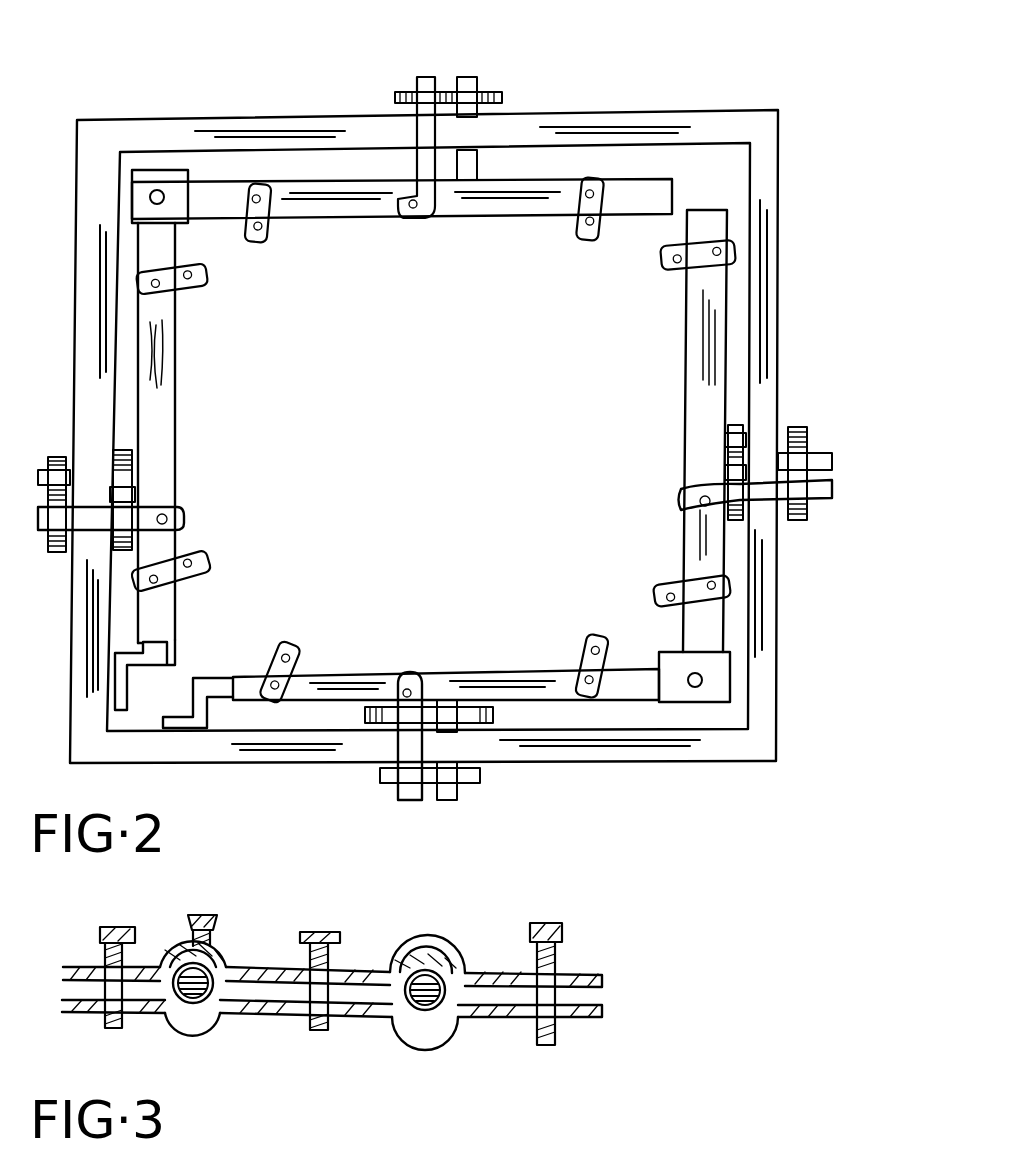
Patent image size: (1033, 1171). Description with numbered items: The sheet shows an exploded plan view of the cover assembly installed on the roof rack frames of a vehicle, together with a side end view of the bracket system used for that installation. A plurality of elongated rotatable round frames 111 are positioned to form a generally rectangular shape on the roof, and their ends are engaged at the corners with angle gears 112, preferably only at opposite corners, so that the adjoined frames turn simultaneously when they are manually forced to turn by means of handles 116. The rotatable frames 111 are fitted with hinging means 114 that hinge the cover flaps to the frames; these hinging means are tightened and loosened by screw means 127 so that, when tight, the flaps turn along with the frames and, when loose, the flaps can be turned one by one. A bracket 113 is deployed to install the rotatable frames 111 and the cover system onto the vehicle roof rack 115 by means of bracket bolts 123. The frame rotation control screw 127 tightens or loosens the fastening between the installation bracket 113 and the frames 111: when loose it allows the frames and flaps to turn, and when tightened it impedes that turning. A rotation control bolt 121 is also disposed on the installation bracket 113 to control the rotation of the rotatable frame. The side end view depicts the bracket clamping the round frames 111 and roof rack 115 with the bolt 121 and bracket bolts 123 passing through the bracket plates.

In FIG. 2, the elongated rotatable round frame 111 is at (393, 194).
In FIG. 3, the elongated rotatable round frame 111 is at (200, 1002).
In FIG. 2, the angle gear 112 is at (712, 675).
In FIG. 2, the bracket 113 is at (418, 806).
In FIG. 2, the hinging means 114 is at (600, 180).
In FIG. 2, the vehicle roof rack 115 is at (773, 188).
In FIG. 3, the vehicle roof rack 115 is at (418, 1012).
In FIG. 2, the handle 116 is at (198, 728).
In FIG. 2, the rotation control bolt 121 is at (710, 508).
In FIG. 3, the rotation control bolt 121 is at (220, 912).
In FIG. 2, the bracket bolt 123 is at (792, 520).
In FIG. 3, the bracket bolt 123 is at (570, 925).
In FIG. 2, the frame rotation control screw 127 is at (583, 700).